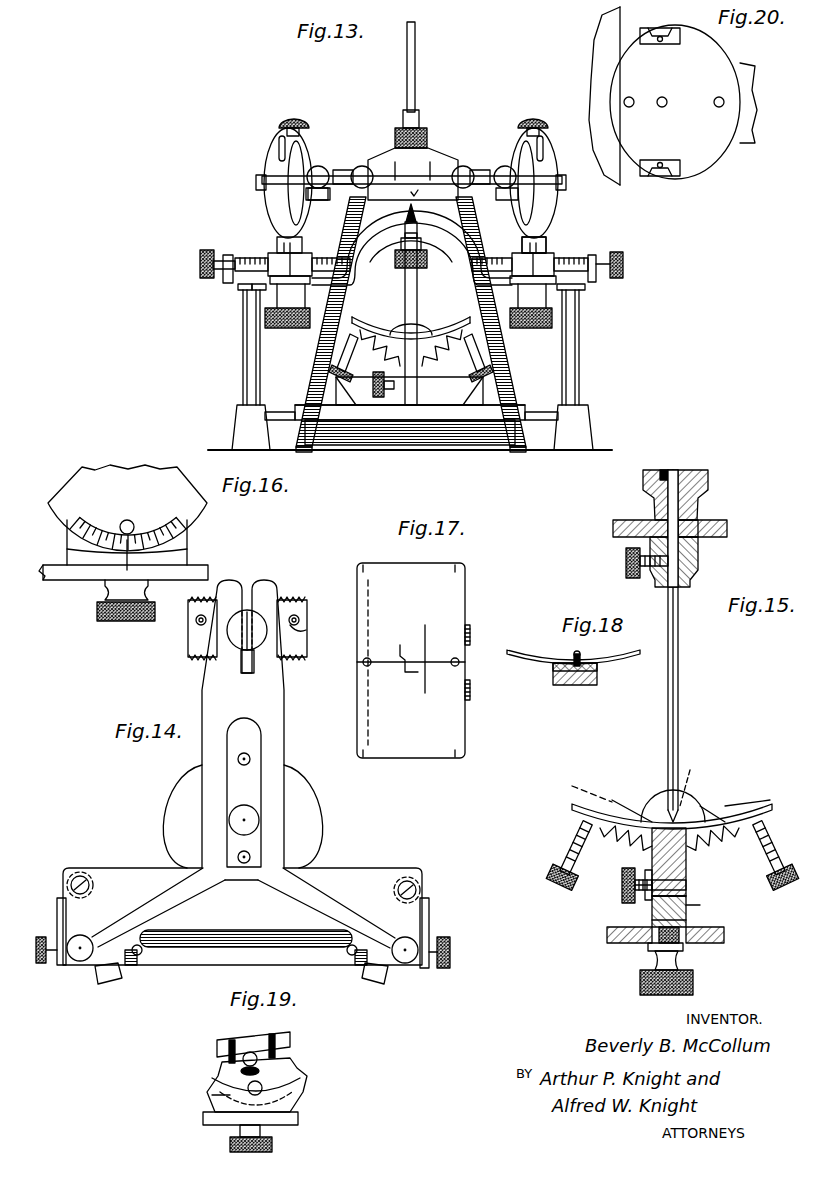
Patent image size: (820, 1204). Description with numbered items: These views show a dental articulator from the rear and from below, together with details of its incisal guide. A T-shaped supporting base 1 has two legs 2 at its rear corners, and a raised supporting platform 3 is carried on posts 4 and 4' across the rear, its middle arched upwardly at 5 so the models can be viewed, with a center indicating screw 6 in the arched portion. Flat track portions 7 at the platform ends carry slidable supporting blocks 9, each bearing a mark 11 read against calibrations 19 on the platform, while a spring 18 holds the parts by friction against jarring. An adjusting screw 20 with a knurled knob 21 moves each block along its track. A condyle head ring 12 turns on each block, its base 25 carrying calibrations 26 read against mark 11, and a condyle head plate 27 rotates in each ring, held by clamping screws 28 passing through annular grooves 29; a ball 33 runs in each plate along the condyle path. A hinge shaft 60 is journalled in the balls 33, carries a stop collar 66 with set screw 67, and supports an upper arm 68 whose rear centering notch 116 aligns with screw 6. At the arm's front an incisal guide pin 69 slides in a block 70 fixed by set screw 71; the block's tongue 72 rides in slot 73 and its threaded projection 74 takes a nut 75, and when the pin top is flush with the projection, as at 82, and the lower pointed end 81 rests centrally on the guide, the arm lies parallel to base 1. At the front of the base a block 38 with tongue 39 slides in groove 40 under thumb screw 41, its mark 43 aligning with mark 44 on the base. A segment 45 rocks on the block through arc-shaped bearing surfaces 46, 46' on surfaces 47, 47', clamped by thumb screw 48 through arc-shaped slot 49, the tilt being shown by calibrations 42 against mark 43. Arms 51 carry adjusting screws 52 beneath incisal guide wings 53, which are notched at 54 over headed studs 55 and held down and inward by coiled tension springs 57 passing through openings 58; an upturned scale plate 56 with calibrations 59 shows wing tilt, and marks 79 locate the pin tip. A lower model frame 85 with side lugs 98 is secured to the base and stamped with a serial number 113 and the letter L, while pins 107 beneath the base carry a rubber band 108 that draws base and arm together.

In FIG. 13, the supporting base 1 is at (535, 412).
In FIG. 20, the supporting base 1 is at (745, 129).
In FIG. 16, the supporting base 1 is at (62, 570).
In FIG. 14, the supporting base 1 is at (348, 888).
In FIG. 15, the supporting base 1 is at (724, 937).
In FIG. 19, the supporting base 1 is at (290, 1120).
In FIG. 13, the legs 2 is at (245, 430).
In FIG. 14, the legs 2 is at (410, 940).
In FIG. 13, the supporting platform 3 is at (340, 288).
In FIG. 13, the post 4 is at (226, 344).
In FIG. 13, the post 4' is at (239, 344).
In FIG. 13, the upwardly bowed portion 5 is at (390, 232).
In FIG. 13, the center indicating screw 6 is at (416, 212).
In FIG. 13, the track portions 7 is at (320, 314).
In FIG. 13, the supporting block 9 is at (276, 262).
In FIG. 13, the mark 11 is at (562, 268).
In FIG. 13, the condyle head ring 12 is at (275, 200).
In FIG. 17, the spring 18 is at (380, 600).
In FIG. 13, the calibrations 19 is at (545, 300).
In FIG. 13, the adjusting screw 20 is at (246, 276).
In FIG. 13, the knurled knob 21 is at (200, 265).
In FIG. 13, the base of condyle head ring 25 is at (548, 250).
In FIG. 13, the calibrations 26 is at (518, 244).
In FIG. 13, the condyle head plate 27 is at (520, 162).
In FIG. 13, the clamping screws 28 is at (538, 120).
In FIG. 13, the annular grooves 29 is at (545, 152).
In FIG. 13, the ball 33 is at (530, 180).
In FIG. 16, the block 38 is at (172, 553).
In FIG. 15, the block 38 is at (652, 912).
In FIG. 19, the block 38 is at (294, 1100).
In FIG. 14, the tongue portion 39 is at (245, 602).
In FIG. 15, the tongue portion 39 is at (680, 934).
In FIG. 14, the groove 40 is at (257, 660).
In FIG. 15, the groove 40 is at (650, 926).
In FIG. 16, the thumb screw 41 is at (108, 617).
In FIG. 14, the thumb screw 41 is at (238, 640).
In FIG. 15, the thumb screw 41 is at (686, 964).
In FIG. 19, the thumb screw 41 is at (272, 1146).
In FIG. 16, the calibrations 42 is at (184, 514).
In FIG. 16, the positioning mark 43 is at (131, 563).
In FIG. 16, the mark 44 is at (132, 564).
In FIG. 16, the segment 45 is at (127, 508).
In FIG. 15, the segment 45 is at (688, 872).
In FIG. 18, the segment 45 is at (597, 677).
In FIG. 19, the segment 45 is at (302, 1082).
In FIG. 15, the bearing surface 46 is at (632, 874).
In FIG. 15, the bearing surface 46' is at (693, 905).
In FIG. 15, the bearing surface 47 is at (622, 885).
In FIG. 15, the bearing surface 47' is at (727, 914).
In FIG. 13, the threaded pin 48 is at (380, 369).
In FIG. 15, the threaded pin 48 is at (622, 896).
In FIG. 19, the threaded pin 48 is at (232, 1096).
In FIG. 15, the arc-shaped slot 49 is at (672, 884).
In FIG. 19, the arc-shaped slot 49 is at (248, 1090).
In FIG. 14, the arms 51 is at (300, 630).
In FIG. 15, the arms 51 is at (614, 802).
In FIG. 19, the arms 51 is at (254, 1052).
In FIG. 14, the adjusting screws 52 is at (306, 619).
In FIG. 15, the adjusting screws 52 is at (566, 854).
In FIG. 19, the adjusting screws 52 is at (266, 1066).
In FIG. 14, the incisal guide wings 53 is at (188, 637).
In FIG. 17, the incisal guide wings 53 is at (411, 662).
In FIG. 15, the incisal guide wings 53 is at (626, 806).
In FIG. 18, the incisal guide wings 53 is at (526, 656).
In FIG. 19, the incisal guide wings 53 is at (282, 1038).
In FIG. 18, the notch 54 is at (583, 654).
In FIG. 17, the headed studs 55 is at (362, 665).
In FIG. 18, the headed studs 55 is at (574, 655).
In FIG. 17, the scale plate 56 is at (469, 662).
In FIG. 19, the scale plate 56 is at (218, 1047).
In FIG. 14, the tension springs 57 is at (292, 606).
In FIG. 15, the tension springs 57 is at (618, 842).
In FIG. 19, the tension springs 57 is at (280, 1052).
In FIG. 15, the openings 58 is at (687, 784).
In FIG. 17, the calibrations 59 is at (470, 628).
In FIG. 13, the hinge shaft 60 is at (345, 192).
In FIG. 13, the stop collar 66 is at (338, 170).
In FIG. 13, the set screw 67 is at (318, 166).
In FIG. 13, the upper arm 68 is at (418, 168).
In FIG. 15, the upper arm 68 is at (613, 531).
In FIG. 15, the incisal guide pin 69 is at (672, 670).
In FIG. 15, the block 70 is at (698, 562).
In FIG. 15, the set screw 71 is at (626, 562).
In FIG. 15, the tongue portion 72 is at (706, 521).
In FIG. 15, the slot 73 is at (727, 531).
In FIG. 15, the screw-threaded projection 74 is at (667, 475).
In FIG. 15, the nut 75 is at (708, 478).
In FIG. 17, the marks 79 is at (416, 642).
In FIG. 15, the lower pointed end 81 is at (662, 796).
In FIG. 15, the flush position 82 is at (688, 468).
In FIG. 13, the lower model frame 85 is at (440, 406).
In FIG. 20, the lower model frame 85 is at (697, 160).
In FIG. 14, the lower model frame 85 is at (312, 802).
In FIG. 13, the projecting lugs 98 is at (340, 388).
In FIG. 20, the projecting lugs 98 is at (686, 173).
In FIG. 13, the pins 107 is at (306, 446).
In FIG. 14, the pins 107 is at (148, 966).
In FIG. 13, the rubber band 108 is at (508, 380).
In FIG. 14, the rubber band 108 is at (244, 940).
In FIG. 20, the serial number 113 is at (698, 112).
In FIG. 13, the centering notch 116 is at (418, 192).